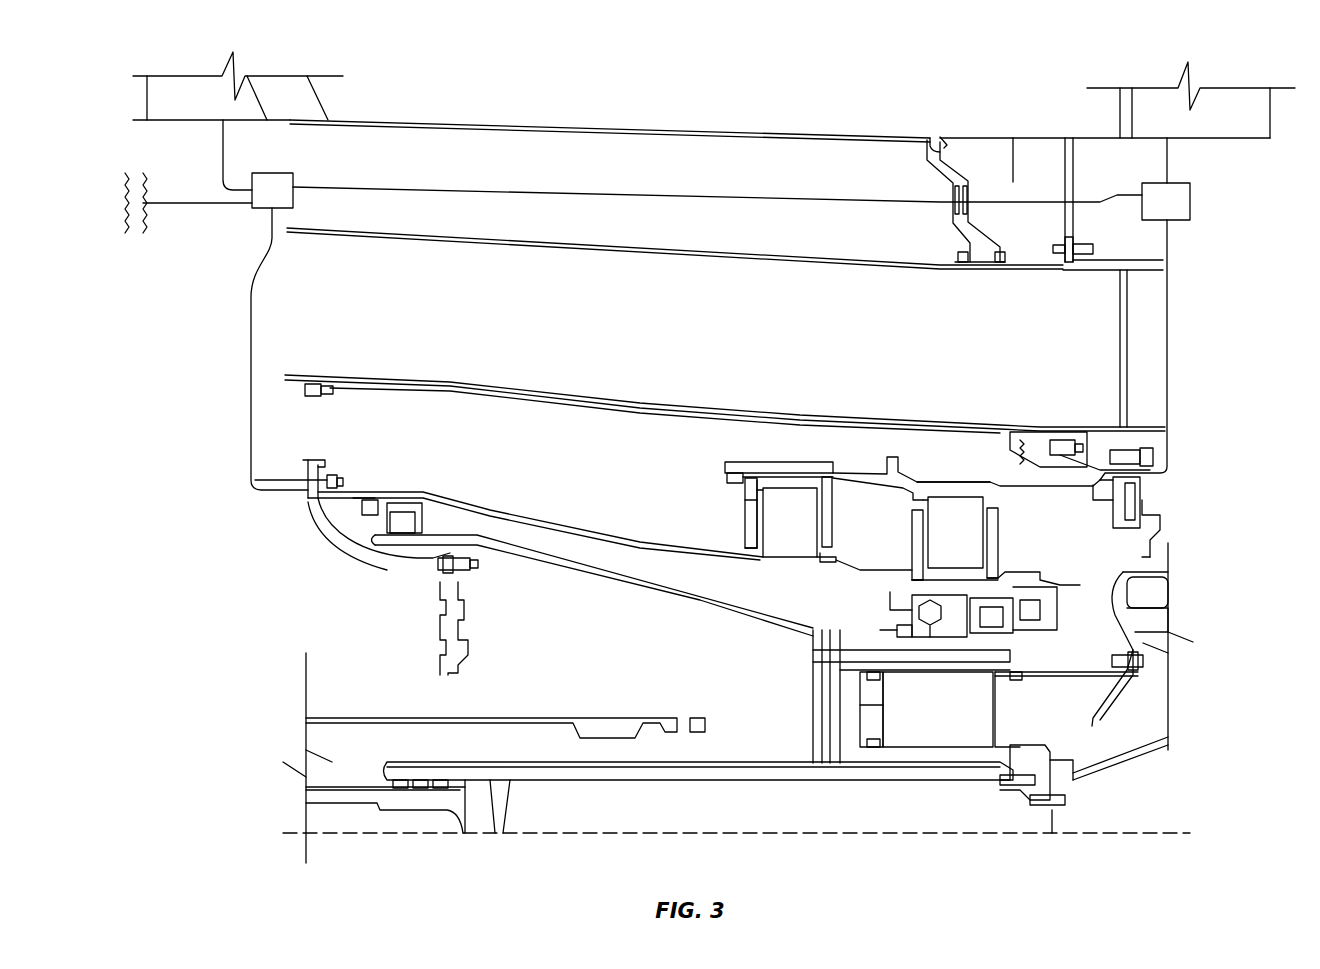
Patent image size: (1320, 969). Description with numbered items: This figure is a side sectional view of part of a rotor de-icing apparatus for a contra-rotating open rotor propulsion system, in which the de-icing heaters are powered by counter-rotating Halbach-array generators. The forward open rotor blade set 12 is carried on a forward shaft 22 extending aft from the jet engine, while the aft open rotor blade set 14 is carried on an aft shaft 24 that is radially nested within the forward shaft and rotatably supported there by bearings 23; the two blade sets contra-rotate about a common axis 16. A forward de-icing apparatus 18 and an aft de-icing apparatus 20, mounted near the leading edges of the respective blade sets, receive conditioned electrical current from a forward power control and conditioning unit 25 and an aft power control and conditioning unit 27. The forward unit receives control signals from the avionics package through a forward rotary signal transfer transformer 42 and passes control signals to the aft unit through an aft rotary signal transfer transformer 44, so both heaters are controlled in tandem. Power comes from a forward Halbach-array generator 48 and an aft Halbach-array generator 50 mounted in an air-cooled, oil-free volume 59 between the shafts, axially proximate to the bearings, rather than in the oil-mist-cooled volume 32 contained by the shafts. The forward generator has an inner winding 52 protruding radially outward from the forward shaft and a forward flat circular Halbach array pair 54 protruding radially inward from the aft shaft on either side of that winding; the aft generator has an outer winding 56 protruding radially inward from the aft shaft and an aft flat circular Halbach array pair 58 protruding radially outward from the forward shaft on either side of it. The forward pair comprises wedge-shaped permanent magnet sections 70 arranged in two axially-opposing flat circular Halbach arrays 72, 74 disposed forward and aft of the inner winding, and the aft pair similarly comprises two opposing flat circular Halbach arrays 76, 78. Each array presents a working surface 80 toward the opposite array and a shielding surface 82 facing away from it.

The forward open rotor blade set 12 is at (327, 98).
The aft open rotor blade set 14 is at (1118, 121).
The common axis 16 is at (1127, 833).
The forward de-icing apparatus 18 is at (203, 109).
The aft de-icing apparatus 20 is at (1170, 115).
The forward shaft 22 is at (632, 545).
The bearings 23 is at (957, 640).
The aft shaft 24 is at (1078, 637).
The forward power control and conditioning unit 25 is at (285, 201).
The aft power control and conditioning unit 27 is at (1179, 212).
The oil-mist-cooled volume 32 is at (501, 710).
The forward rotary signal transfer transformer 42 is at (148, 240).
The aft rotary signal transfer transformer 44 is at (953, 206).
The forward Halbach-array generator 48 is at (792, 455).
The aft Halbach-array generator 50 is at (950, 460).
The inner winding 52 is at (803, 537).
The forward flat circular Halbach array pair 54 is at (744, 503).
The outer winding 56 is at (968, 547).
The aft flat circular Halbach array pair 58 is at (1003, 540).
The oil-free volume 59 is at (586, 480).
The wedge-shaped permanent magnet sections 70 is at (745, 540).
The forward flat circular Halbach array 72 is at (752, 480).
The aft flat circular Halbach array 74 is at (828, 490).
The flat circular Halbach array 76 is at (915, 520).
The flat circular Halbach array 78 is at (1000, 515).
The working surface 80 is at (768, 490).
The shielding surface 82 is at (745, 490).